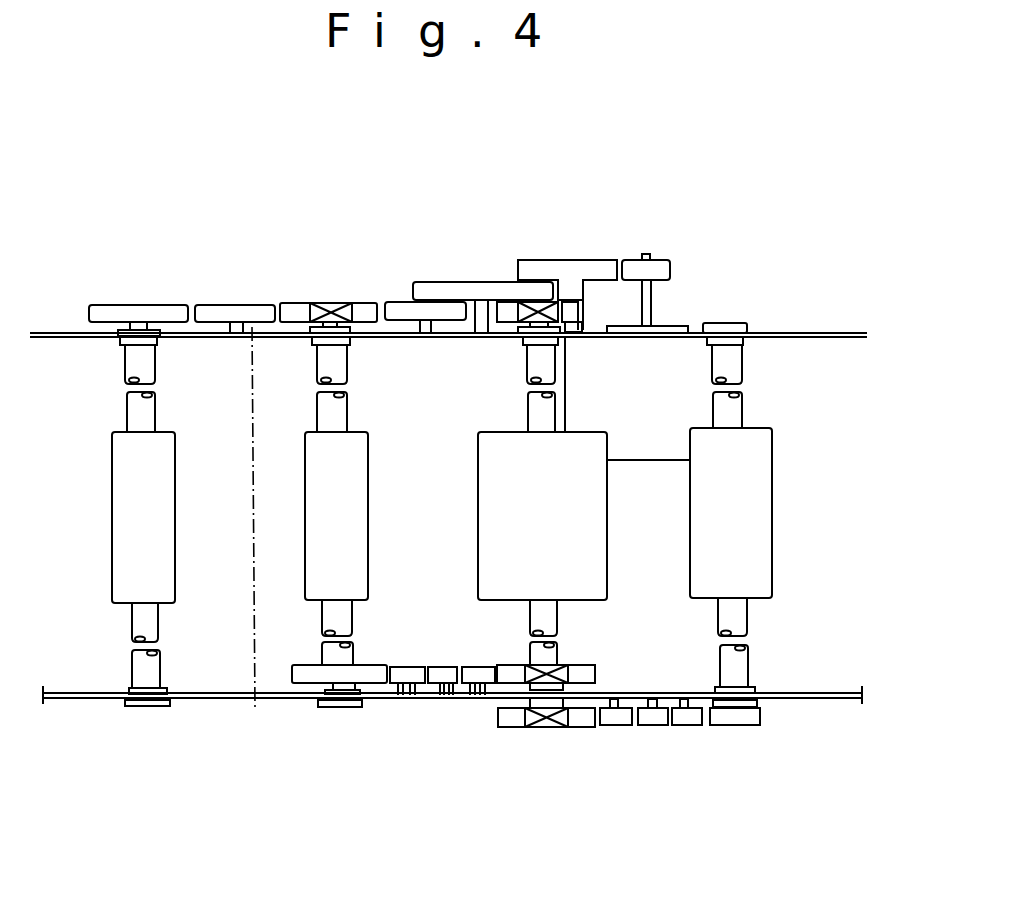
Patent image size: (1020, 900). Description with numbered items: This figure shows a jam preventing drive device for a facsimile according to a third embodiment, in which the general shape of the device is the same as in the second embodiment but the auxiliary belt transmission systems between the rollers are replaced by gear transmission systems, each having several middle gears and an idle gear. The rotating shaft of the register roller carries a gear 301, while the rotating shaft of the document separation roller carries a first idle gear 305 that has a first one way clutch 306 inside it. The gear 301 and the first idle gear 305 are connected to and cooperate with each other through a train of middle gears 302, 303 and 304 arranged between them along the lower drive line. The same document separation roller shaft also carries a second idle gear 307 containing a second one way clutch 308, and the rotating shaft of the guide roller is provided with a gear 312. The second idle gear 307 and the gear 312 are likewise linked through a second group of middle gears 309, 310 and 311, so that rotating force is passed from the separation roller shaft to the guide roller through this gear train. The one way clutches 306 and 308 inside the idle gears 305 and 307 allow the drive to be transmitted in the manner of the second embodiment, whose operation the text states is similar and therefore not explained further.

The gear 301 is at (289, 688).
The middle gear 302 is at (390, 690).
The middle gear 303 is at (427, 690).
The middle gear 304 is at (460, 690).
The first idle gear 305 is at (693, 603).
The first one way clutch 306 is at (560, 665).
The second idle gear 307 is at (582, 747).
The second one way clutch 308 is at (558, 727).
The middle gear 309 is at (618, 725).
The middle gear 310 is at (657, 725).
The middle gear 311 is at (693, 725).
The gear 312 is at (760, 718).